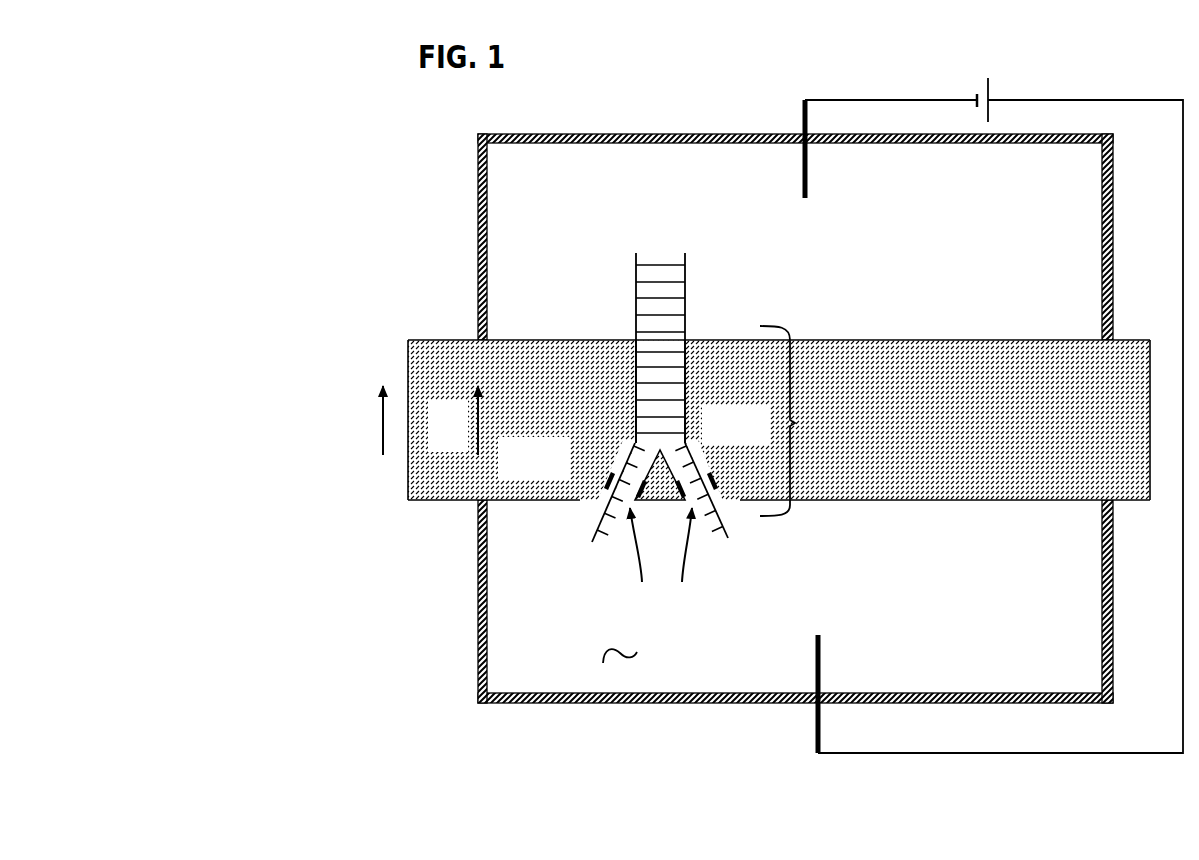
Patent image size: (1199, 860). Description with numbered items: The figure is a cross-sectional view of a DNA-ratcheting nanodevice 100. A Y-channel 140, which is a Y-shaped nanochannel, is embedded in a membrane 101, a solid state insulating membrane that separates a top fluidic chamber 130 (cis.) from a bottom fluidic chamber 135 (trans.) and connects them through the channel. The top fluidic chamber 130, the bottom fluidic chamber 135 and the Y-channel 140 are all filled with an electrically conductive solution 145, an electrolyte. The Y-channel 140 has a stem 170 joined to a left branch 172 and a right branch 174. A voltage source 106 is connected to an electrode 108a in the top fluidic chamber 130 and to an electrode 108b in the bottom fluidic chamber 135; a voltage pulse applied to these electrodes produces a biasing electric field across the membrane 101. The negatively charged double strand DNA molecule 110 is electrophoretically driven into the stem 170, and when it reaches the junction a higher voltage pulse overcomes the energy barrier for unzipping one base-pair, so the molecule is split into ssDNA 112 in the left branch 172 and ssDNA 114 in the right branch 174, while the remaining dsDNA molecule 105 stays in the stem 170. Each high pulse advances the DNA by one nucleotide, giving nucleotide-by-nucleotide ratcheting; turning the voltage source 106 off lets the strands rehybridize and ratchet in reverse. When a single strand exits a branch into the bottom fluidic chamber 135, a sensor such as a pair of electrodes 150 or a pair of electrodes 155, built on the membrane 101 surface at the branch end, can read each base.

The DNA-ratcheting nanodevice 100 is at (270, 86).
The membrane 101 is at (423, 373).
The remaining dsDNA molecule 105 is at (685, 320).
The voltage source 106 is at (988, 80).
The electrode 108a is at (803, 118).
The electrode 108b is at (817, 733).
The double strand DNA molecule 110 is at (654, 248).
The ssDNA 112 is at (592, 541).
The ssDNA 114 is at (728, 538).
The top fluidic chamber 130 is at (466, 192).
The bottom fluidic chamber 135 is at (468, 656).
The Y-channel 140 is at (794, 423).
The electrically conductive solution 145 is at (648, 652).
The pair of electrodes 150 is at (594, 471).
The pair of electrodes 155 is at (724, 472).
The stem 170 is at (632, 336).
The left branch 172 is at (625, 561).
The right branch 174 is at (695, 561).